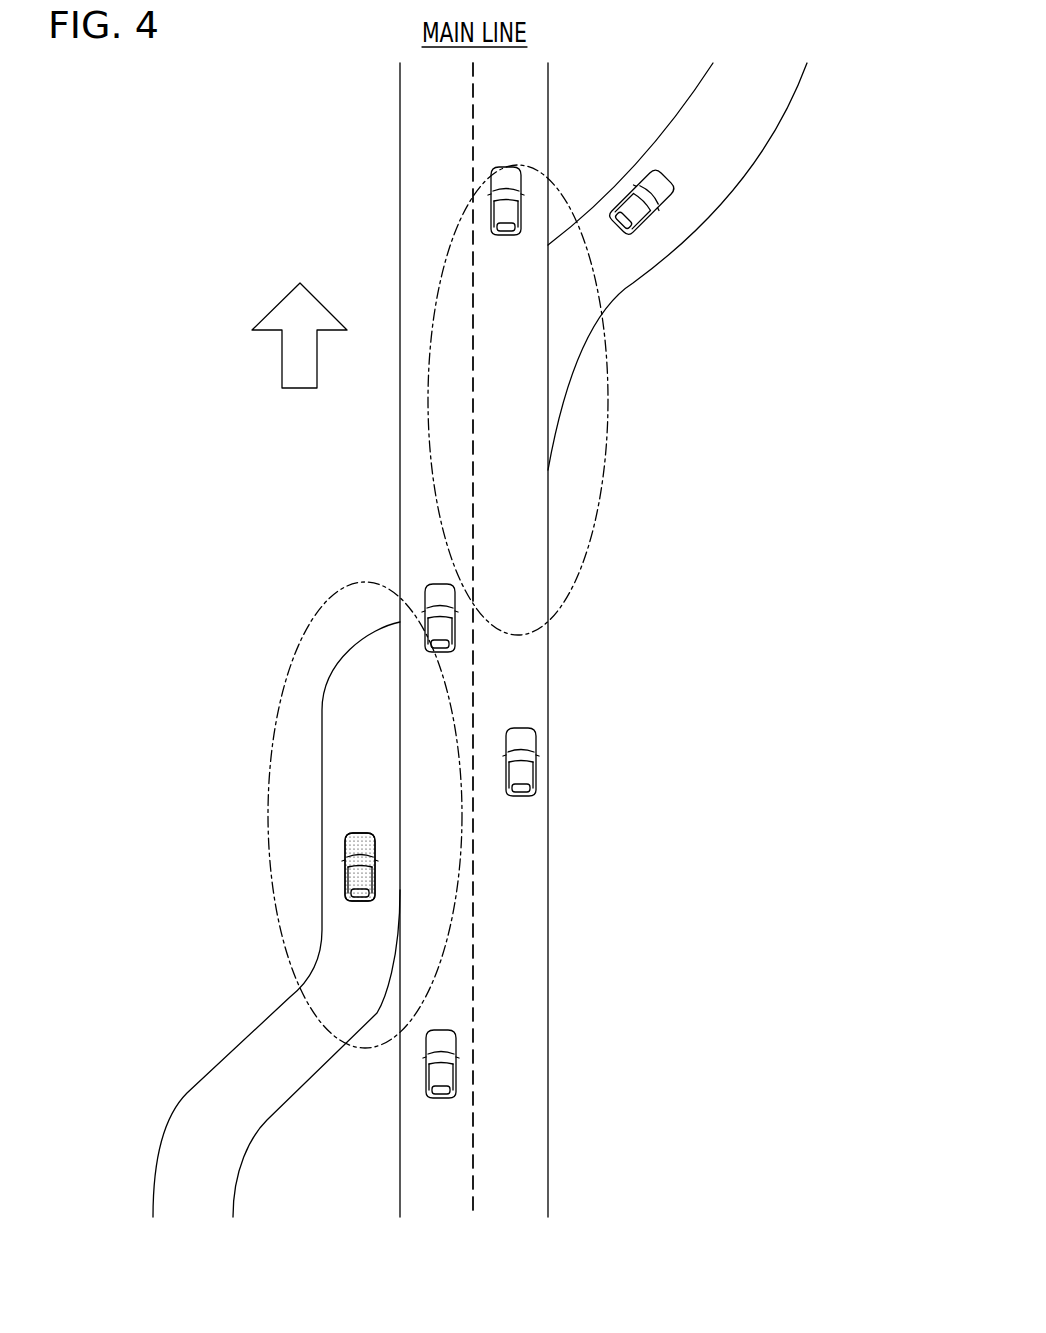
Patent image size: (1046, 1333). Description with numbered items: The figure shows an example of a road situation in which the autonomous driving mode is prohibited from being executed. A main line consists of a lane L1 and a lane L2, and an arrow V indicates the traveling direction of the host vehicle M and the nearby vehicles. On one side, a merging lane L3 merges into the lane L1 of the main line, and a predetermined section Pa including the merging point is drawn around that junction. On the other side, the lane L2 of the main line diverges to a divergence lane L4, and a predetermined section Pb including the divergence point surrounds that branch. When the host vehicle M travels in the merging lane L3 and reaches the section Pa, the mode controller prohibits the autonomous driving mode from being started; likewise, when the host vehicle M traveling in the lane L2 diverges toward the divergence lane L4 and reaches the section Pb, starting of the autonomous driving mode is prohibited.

The arrow V is at (279, 304).
The predetermined section including a divergence point Pb is at (609, 396).
The predetermined section including a merging point Pa is at (268, 765).
The host vehicle M is at (345, 866).
The lane of the main line L1 is at (455, 1250).
The lane of the main line L2 is at (529, 1250).
The merging lane L3 is at (292, 1255).
The divergence lane L4 is at (872, 47).